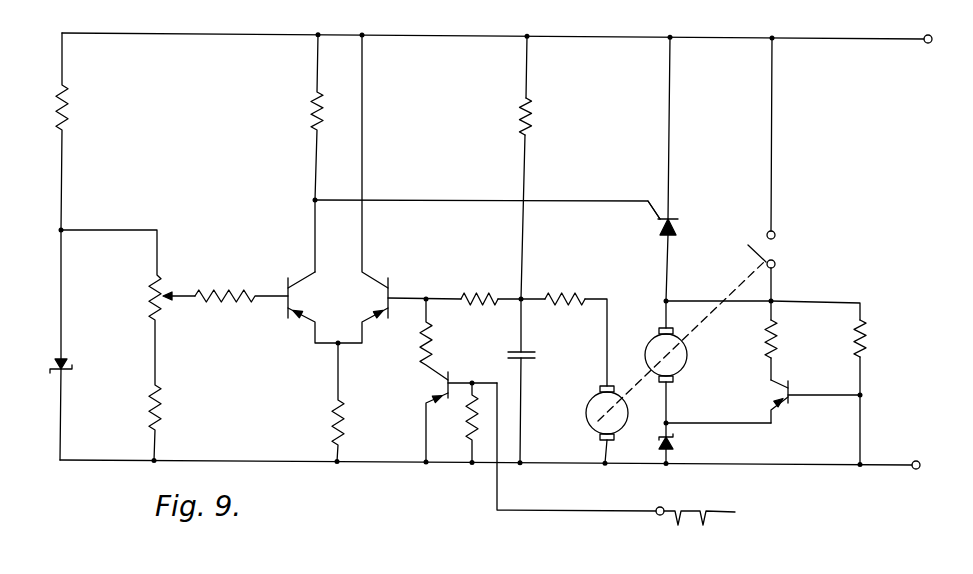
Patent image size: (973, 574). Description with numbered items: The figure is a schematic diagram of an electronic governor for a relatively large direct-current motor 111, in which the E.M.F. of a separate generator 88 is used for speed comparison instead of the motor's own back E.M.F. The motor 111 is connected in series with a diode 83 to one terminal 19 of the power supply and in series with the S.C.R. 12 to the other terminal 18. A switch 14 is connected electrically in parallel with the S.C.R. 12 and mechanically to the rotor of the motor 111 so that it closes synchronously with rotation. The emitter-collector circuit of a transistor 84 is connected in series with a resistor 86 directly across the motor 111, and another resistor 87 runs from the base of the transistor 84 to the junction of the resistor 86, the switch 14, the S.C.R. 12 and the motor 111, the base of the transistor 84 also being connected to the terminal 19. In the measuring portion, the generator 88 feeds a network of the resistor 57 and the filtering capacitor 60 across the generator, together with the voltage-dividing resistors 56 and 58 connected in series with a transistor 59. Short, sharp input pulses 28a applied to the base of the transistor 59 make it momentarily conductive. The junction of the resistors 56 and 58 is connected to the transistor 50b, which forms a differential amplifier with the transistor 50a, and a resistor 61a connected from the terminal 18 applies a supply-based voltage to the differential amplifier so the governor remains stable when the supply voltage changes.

The terminal 18 is at (931, 36).
The common terminal 19 is at (914, 461).
The resistor 61a is at (531, 117).
The S.C.R. 12 is at (684, 211).
The switch 14 is at (771, 257).
The transistor 50a is at (286, 293).
The transistor 50b is at (393, 292).
The resistor 56 is at (467, 295).
The resistor 57 is at (553, 295).
The resistor 58 is at (431, 336).
The transistor 59 is at (443, 384).
The capacitor 60 is at (526, 352).
The generator 88 is at (586, 411).
The motor 111 is at (675, 372).
The diode 83 is at (674, 442).
The transistor 84 is at (784, 394).
The resistor 86 is at (776, 327).
The resistor 87 is at (866, 336).
The input pulses 28a is at (708, 516).